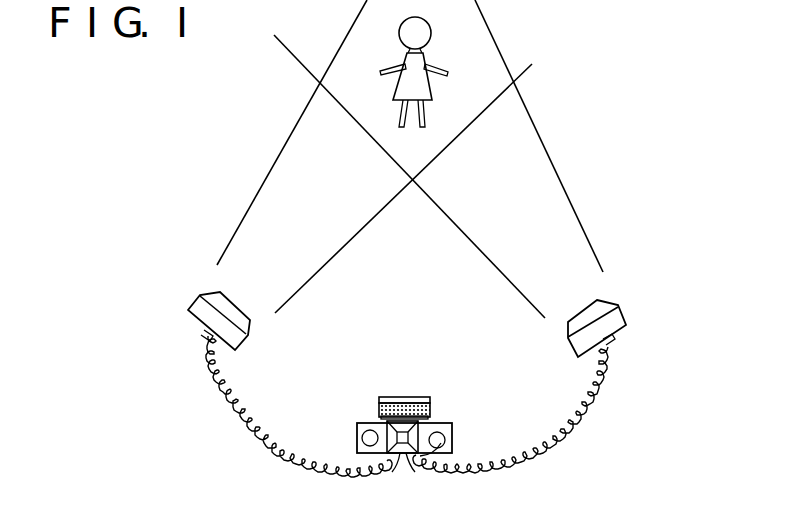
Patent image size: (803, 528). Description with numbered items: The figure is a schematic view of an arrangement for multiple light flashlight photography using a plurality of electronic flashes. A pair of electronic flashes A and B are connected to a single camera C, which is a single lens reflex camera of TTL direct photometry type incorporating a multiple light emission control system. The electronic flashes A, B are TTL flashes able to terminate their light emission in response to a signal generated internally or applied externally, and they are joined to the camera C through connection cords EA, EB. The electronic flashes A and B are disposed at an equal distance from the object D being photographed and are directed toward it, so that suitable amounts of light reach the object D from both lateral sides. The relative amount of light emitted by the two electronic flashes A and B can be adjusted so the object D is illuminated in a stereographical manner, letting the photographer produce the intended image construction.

The electronic flash A is at (198, 306).
The electronic flash B is at (614, 318).
The camera C is at (446, 430).
The object D is at (418, 62).
The connection cord EA is at (268, 452).
The connection cord EB is at (533, 462).